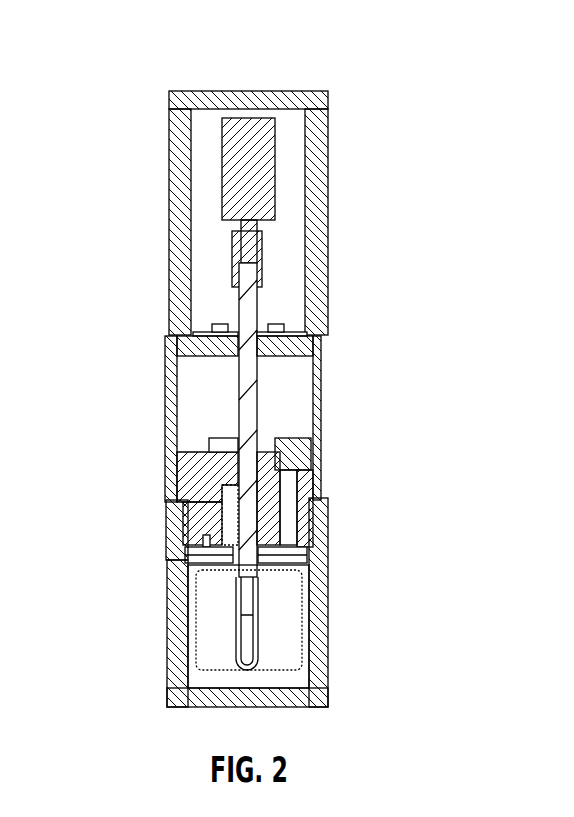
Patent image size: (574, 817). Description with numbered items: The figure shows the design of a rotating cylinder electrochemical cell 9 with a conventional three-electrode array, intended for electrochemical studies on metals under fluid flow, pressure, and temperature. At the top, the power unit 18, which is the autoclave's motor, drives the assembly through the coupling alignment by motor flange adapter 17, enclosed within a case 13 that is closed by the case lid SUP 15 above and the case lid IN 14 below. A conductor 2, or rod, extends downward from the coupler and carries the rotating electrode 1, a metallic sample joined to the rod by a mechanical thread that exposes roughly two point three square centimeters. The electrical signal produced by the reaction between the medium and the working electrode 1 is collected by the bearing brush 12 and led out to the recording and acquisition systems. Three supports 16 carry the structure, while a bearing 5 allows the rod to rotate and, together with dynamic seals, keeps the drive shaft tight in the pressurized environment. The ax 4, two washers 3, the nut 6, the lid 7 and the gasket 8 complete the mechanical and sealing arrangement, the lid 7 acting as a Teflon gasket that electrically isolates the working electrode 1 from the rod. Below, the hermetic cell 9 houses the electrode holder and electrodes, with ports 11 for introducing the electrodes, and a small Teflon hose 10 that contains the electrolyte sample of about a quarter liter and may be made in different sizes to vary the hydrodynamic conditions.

The electrode 1 is at (255, 638).
The conductor 2 is at (253, 410).
The washer 3 is at (262, 575).
The ax 4 is at (225, 513).
The bearing 5 is at (227, 487).
The nut 6 is at (307, 480).
The lid 7 is at (195, 557).
The gasket 8 is at (223, 540).
The cell 9 is at (310, 697).
The hose 10 is at (187, 680).
The port 11 is at (313, 447).
The bearing brush 12 is at (196, 333).
The case 13 is at (318, 170).
The case lid IN 14 is at (212, 327).
The case lid SUP 15 is at (178, 101).
The support 16 is at (173, 410).
The coupling alignment by motor flange adapter 17 is at (227, 253).
The power unit 18 is at (227, 158).